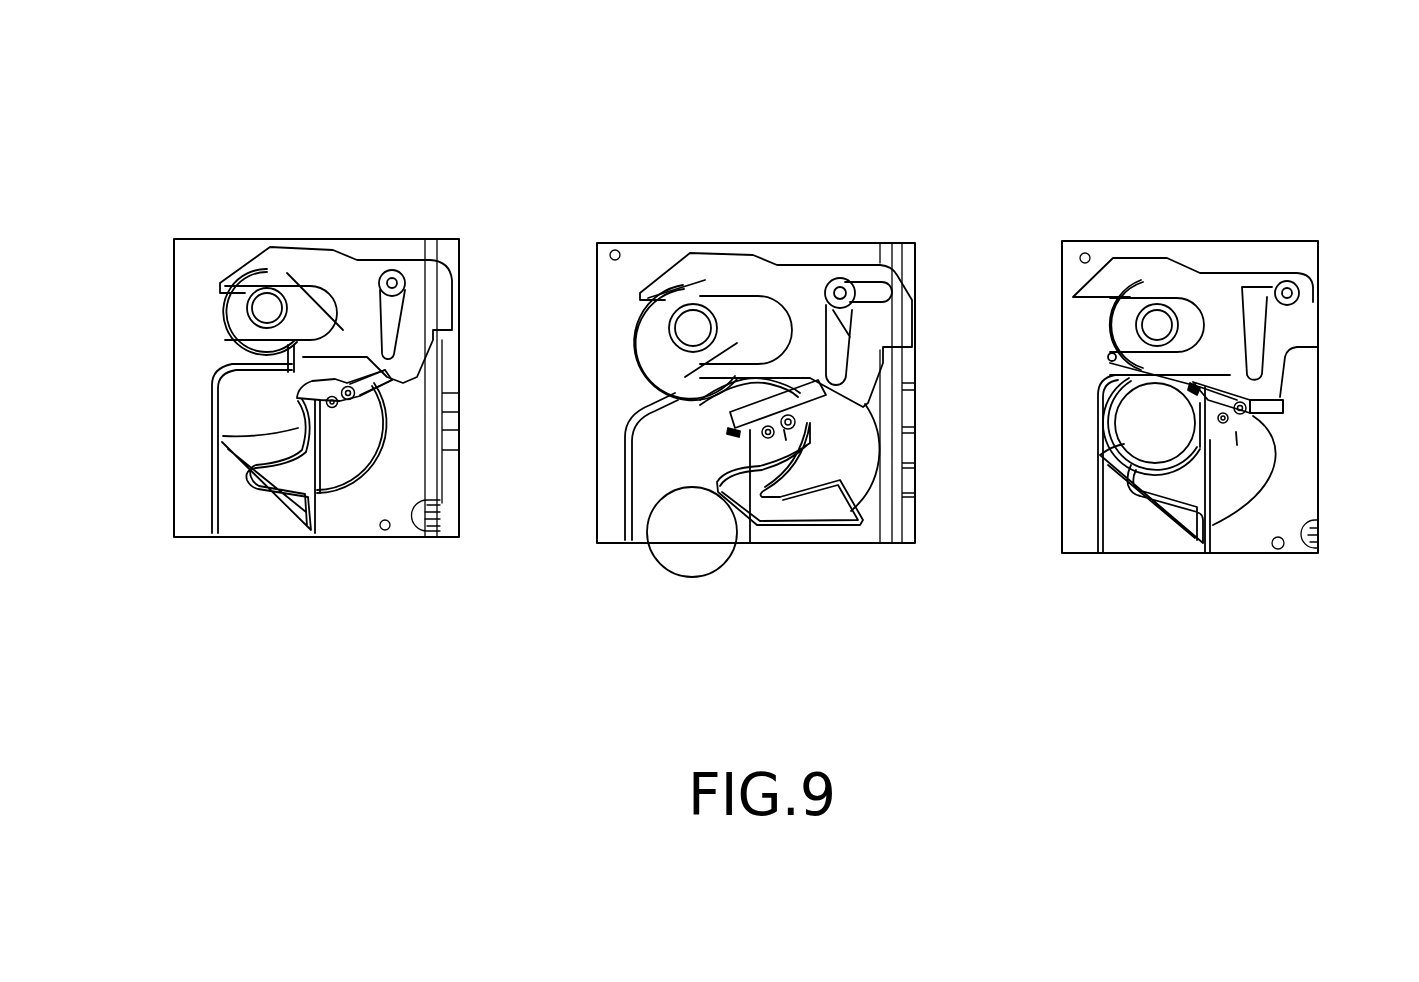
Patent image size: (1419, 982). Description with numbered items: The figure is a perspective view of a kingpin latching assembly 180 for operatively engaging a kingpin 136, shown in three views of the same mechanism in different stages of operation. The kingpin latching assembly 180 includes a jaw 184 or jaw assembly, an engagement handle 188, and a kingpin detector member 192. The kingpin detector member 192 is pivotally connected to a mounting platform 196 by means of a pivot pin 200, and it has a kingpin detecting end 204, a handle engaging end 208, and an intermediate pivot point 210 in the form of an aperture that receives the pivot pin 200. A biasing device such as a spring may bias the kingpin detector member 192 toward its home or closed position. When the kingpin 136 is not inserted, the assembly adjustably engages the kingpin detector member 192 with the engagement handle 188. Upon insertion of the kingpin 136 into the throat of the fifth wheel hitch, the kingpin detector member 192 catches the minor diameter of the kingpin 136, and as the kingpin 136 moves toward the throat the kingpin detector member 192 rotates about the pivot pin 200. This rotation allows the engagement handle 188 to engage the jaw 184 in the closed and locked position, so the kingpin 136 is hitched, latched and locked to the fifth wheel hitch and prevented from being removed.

The kingpin 136 is at (677, 555).
The kingpin latching assembly 180 is at (463, 143).
The jaw 184 is at (268, 507).
The engagement handle 188 is at (307, 246).
The kingpin detector member 192 is at (366, 392).
The mounting platform 196 is at (1223, 250).
The pivot pin 200 is at (333, 404).
The kingpin detecting end 204 is at (298, 398).
The handle engaging end 208 is at (1277, 408).
The intermediate pivot point 210 is at (785, 426).